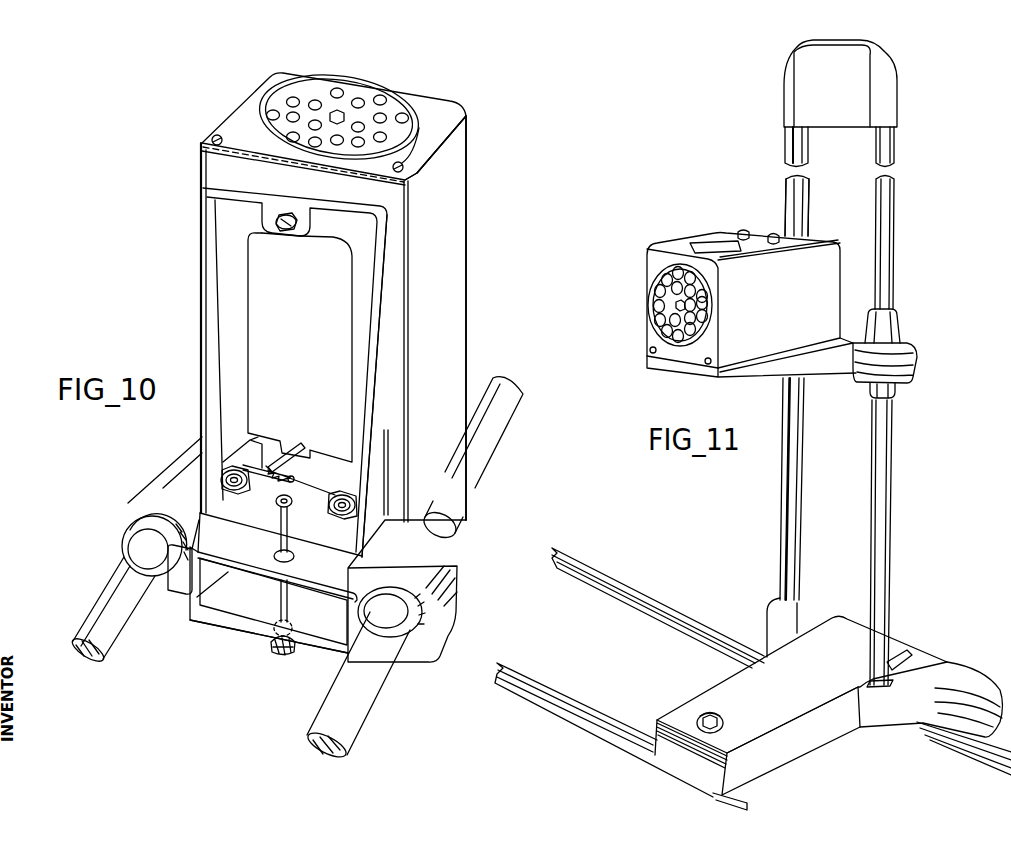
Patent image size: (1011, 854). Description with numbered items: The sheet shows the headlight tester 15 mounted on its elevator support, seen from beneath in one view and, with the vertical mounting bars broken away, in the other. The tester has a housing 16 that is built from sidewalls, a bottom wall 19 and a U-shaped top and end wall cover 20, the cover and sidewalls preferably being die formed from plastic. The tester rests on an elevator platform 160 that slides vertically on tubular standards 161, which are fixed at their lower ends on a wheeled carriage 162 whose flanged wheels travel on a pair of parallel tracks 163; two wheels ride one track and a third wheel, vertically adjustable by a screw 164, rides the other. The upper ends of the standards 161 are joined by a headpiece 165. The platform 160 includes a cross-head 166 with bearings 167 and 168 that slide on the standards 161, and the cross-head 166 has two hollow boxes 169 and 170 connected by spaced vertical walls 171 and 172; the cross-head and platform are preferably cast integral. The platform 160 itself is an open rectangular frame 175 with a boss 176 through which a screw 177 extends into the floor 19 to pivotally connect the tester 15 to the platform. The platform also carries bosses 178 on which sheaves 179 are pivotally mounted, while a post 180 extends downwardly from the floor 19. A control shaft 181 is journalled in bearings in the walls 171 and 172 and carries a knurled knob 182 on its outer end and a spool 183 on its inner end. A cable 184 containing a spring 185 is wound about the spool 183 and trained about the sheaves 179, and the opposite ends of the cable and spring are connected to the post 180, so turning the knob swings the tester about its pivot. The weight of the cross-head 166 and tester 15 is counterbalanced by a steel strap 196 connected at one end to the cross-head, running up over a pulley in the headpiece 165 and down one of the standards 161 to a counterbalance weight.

In FIG. 10, the headlight tester 15 is at (381, 311).
In FIG. 10, the housing 16 is at (474, 194).
In FIG. 10, the bottom wall 19 is at (394, 313).
In FIG. 10, the U-shaped top and end wall cover 20 is at (452, 263).
In FIG. 10, the elevator platform 160 is at (332, 311).
In FIG. 11, the elevator platform 160 is at (828, 368).
In FIG. 11, the tubular standards 161 is at (882, 478).
In FIG. 11, the wheeled carriage 162 is at (918, 655).
In FIG. 11, the tracks 163 is at (520, 687).
In FIG. 11, the screw 164 is at (713, 715).
In FIG. 11, the headpiece 165 is at (878, 50).
In FIG. 10, the cross-head 166 is at (219, 614).
In FIG. 10, the bearing 167 is at (128, 522).
In FIG. 10, the bearing 168 is at (453, 595).
In FIG. 10, the hollow box 169 is at (172, 595).
In FIG. 10, the hollow box 170 is at (415, 664).
In FIG. 10, the vertical wall 171 is at (323, 645).
In FIG. 10, the vertical wall 172 is at (300, 592).
In FIG. 10, the open rectangular frame 175 is at (234, 324).
In FIG. 10, the boss 176 is at (300, 223).
In FIG. 10, the screw 177 is at (282, 236).
In FIG. 10, the bosses 178 is at (250, 438).
In FIG. 10, the sheaves 179 is at (238, 493).
In FIG. 10, the post 180 is at (332, 441).
In FIG. 10, the control shaft 181 is at (280, 596).
In FIG. 10, the knurled knob 182 is at (285, 652).
In FIG. 10, the spool 183 is at (290, 510).
In FIG. 10, the cable 184 is at (306, 491).
In FIG. 10, the spring 185 is at (270, 464).
In FIG. 11, the steel strap 196 is at (805, 195).